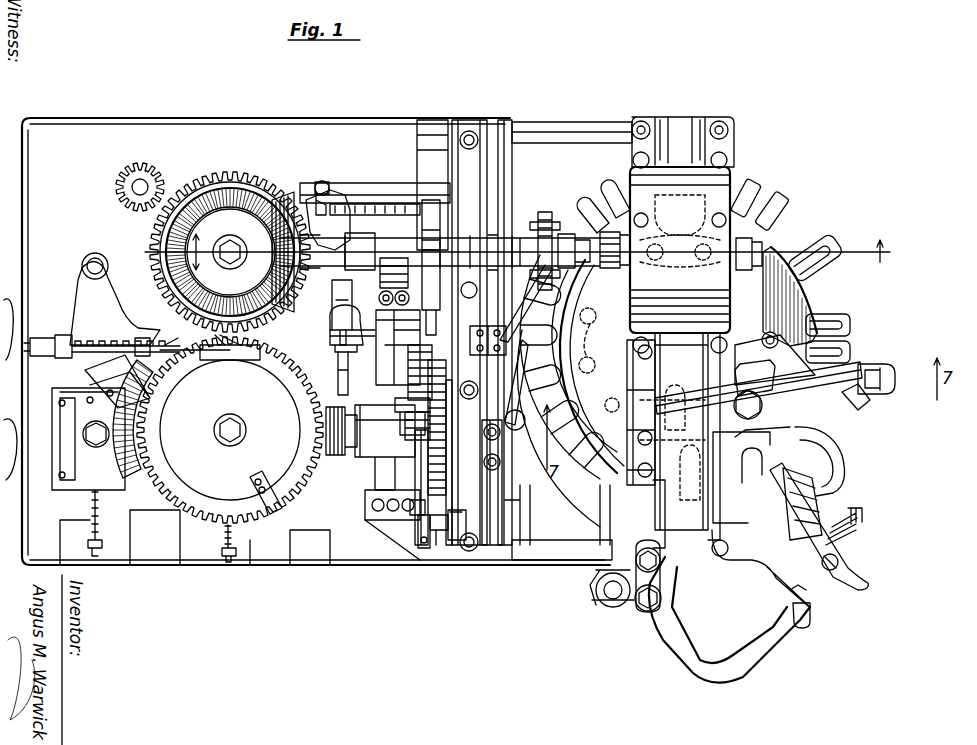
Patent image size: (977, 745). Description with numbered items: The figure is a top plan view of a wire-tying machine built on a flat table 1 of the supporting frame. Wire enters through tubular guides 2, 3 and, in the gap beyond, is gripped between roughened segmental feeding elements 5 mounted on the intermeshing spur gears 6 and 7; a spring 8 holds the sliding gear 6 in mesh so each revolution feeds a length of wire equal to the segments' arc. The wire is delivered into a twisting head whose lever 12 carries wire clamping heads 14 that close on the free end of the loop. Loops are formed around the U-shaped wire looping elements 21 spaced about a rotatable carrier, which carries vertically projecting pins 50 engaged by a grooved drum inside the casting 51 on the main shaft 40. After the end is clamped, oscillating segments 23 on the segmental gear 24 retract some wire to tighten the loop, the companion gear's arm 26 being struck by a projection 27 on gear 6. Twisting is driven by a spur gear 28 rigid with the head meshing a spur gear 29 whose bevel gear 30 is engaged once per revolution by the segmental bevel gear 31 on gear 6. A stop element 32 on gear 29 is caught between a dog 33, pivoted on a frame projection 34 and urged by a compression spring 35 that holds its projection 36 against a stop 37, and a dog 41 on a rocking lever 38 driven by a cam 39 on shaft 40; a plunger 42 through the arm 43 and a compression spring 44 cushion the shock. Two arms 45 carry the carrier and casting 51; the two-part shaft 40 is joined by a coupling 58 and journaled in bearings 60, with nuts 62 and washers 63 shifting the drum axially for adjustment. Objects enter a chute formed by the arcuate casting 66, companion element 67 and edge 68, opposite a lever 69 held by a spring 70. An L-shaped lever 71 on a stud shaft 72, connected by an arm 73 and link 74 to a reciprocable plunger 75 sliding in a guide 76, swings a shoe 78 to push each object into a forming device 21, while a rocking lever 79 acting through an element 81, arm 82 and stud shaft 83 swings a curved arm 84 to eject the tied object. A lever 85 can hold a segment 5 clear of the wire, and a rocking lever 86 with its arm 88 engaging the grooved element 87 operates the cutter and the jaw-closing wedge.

The flat plate or table 1 is at (263, 565).
The tubular guide 2 is at (58, 340).
The tubular guide 3 is at (168, 340).
The segmental feeding elements 5 is at (186, 362).
The spur gear 6 is at (285, 443).
The spur gear 7 is at (255, 182).
The spring 8 is at (228, 532).
The lever 12 is at (486, 350).
The wire clamping heads 14 is at (504, 336).
The wire looping elements 21 is at (852, 343).
The oscillating segments 23 is at (74, 332).
The segmental gear 24 is at (58, 371).
The arm 26 is at (133, 412).
The projection 27 is at (284, 506).
The spur gear 28 is at (428, 332).
The spur gear 29 is at (440, 468).
The bevel gear 30 is at (336, 455).
The segmental bevel gear 31 is at (130, 480).
The stop element 32 is at (418, 455).
The dog 33 is at (405, 514).
The projection 34 is at (445, 560).
The compression spring 35 is at (420, 535).
The projection 36 is at (420, 548).
The stop 37 is at (433, 536).
The rocking lever 38 is at (408, 328).
The cam 39 is at (425, 225).
The main shaft 40 is at (507, 244).
The dog 41 is at (418, 422).
The plunger 42 is at (414, 395).
The arm or projection 43 is at (410, 410).
The compression spring 44 is at (352, 339).
The arms 45 is at (590, 126).
The pins 50 is at (656, 264).
The casting 51 is at (680, 436).
The coupling 58 is at (541, 222).
The bearings 60 is at (681, 244).
The nuts 62 is at (601, 234).
The washers 63 is at (758, 234).
The arcuate casting or cam formation 66 is at (751, 475).
The companion element 67 is at (770, 563).
The edge 68 is at (820, 586).
The lever 69 is at (838, 555).
The spring 70 is at (850, 534).
The L-shaped lever 71 is at (735, 662).
The stud shaft 72 is at (600, 600).
The arm 73 is at (642, 606).
The link 74 is at (660, 580).
The reciprocable plunger 75 is at (630, 509).
The guide 76 is at (578, 402).
The shoe 78 is at (803, 630).
The rocking lever 79 is at (676, 405).
The element 81 is at (886, 372).
The arm 82 is at (858, 400).
The stud shaft 83 is at (852, 412).
The curved arm 84 is at (813, 345).
The lever 85 is at (521, 462).
The rocking lever 86 is at (376, 183).
The annularly grooved element 87 is at (350, 365).
The arm 88 is at (345, 312).